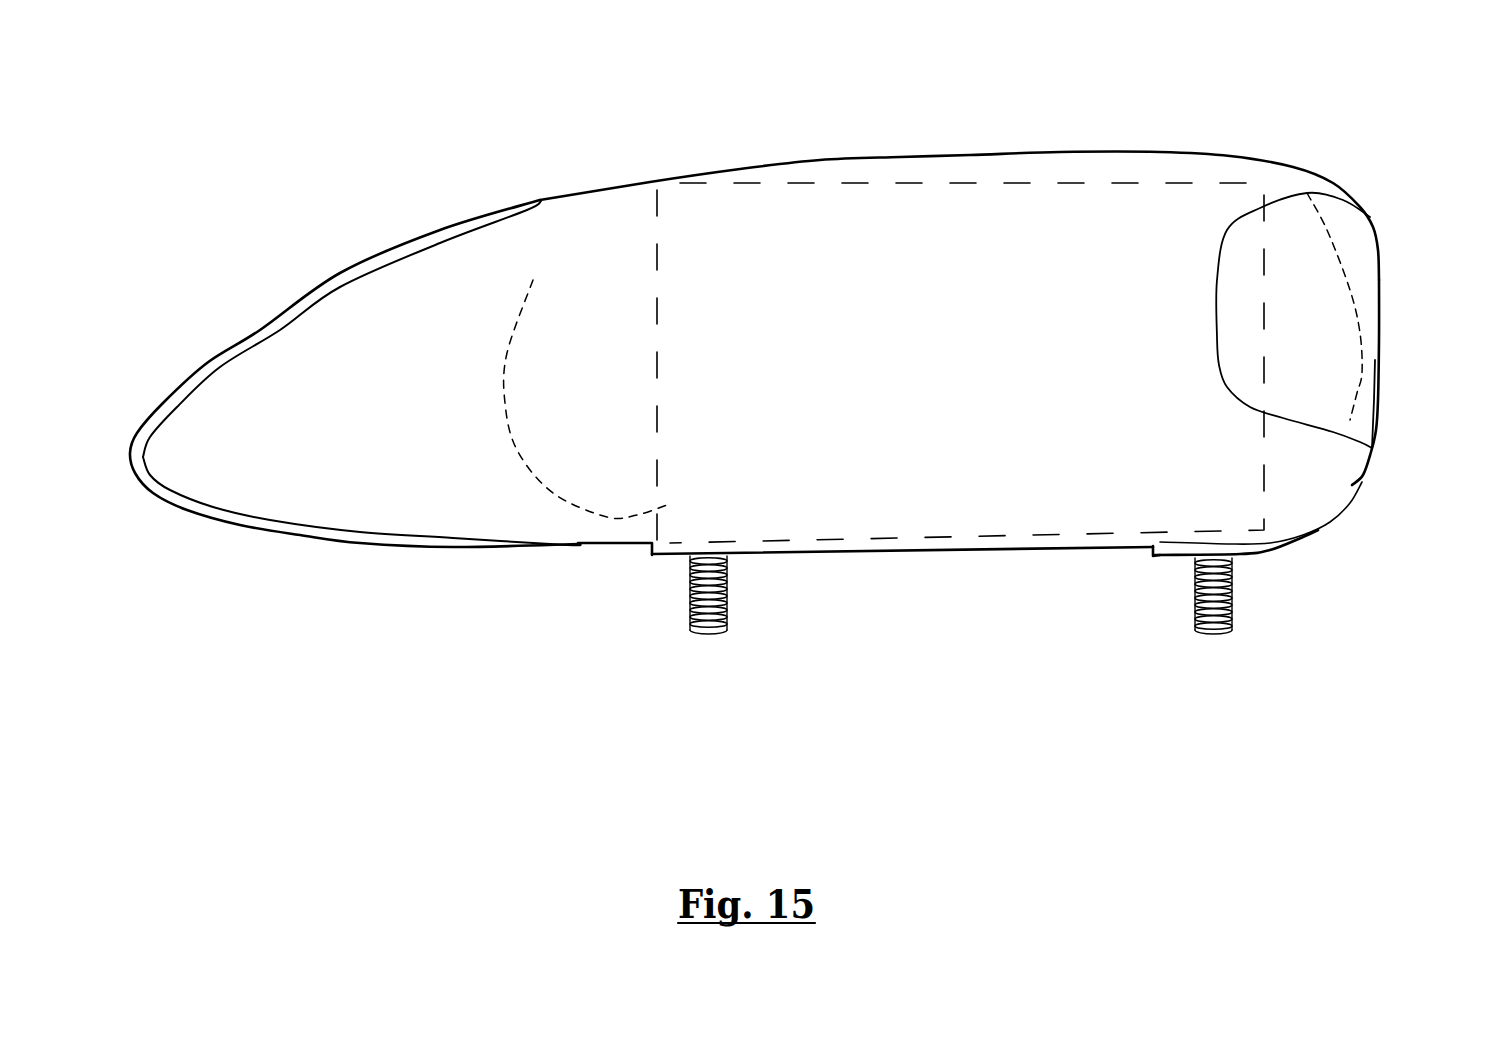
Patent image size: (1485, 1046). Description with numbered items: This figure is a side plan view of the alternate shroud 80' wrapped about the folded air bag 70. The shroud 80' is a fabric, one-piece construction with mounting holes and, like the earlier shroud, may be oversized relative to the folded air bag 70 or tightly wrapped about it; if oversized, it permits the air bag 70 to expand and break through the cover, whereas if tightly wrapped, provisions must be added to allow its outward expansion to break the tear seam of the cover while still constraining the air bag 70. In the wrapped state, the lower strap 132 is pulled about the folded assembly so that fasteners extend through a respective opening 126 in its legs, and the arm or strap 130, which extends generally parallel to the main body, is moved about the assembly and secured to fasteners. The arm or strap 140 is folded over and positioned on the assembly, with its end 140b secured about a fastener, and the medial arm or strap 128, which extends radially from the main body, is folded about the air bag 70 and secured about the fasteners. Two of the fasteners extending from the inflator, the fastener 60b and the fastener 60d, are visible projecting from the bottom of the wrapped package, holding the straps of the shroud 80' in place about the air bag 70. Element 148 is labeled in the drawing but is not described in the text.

The air bag 70 is at (806, 152).
The shroud 80' is at (960, 298).
The opening 126 is at (1380, 270).
The arm or strap 128 is at (1150, 557).
The arm or strap 130 is at (997, 548).
The lower strap 132 is at (397, 287).
The arm or strap 140 is at (248, 311).
The end of strap 140b is at (580, 548).
The lower fairing wall 148 is at (247, 522).
The fastener 60b is at (690, 593).
The fastener 60d is at (1232, 587).